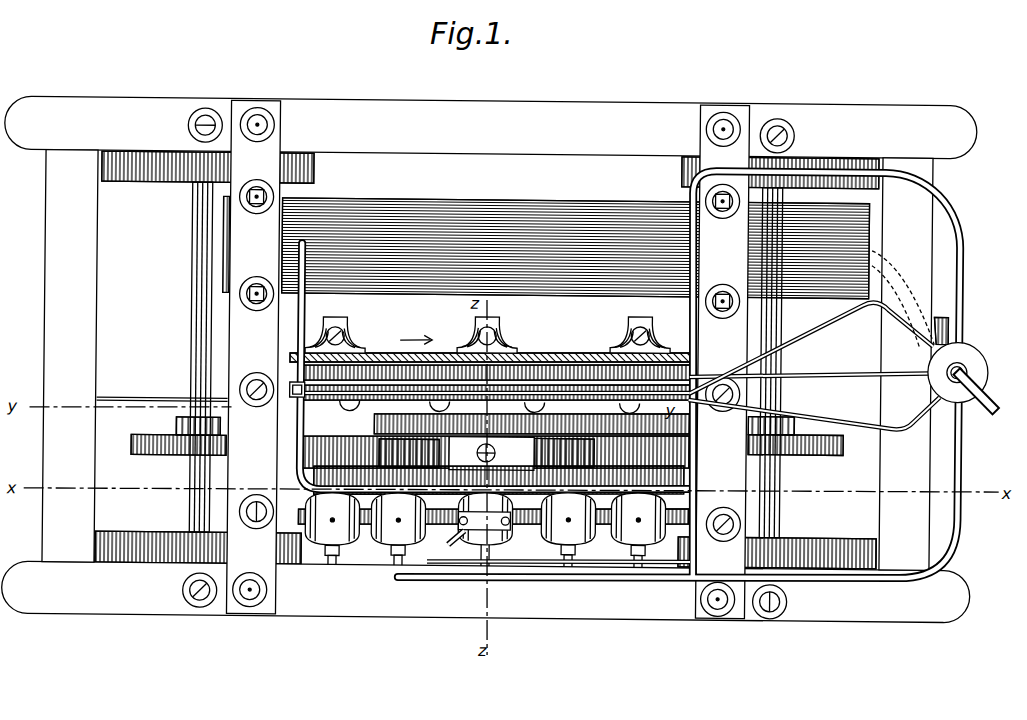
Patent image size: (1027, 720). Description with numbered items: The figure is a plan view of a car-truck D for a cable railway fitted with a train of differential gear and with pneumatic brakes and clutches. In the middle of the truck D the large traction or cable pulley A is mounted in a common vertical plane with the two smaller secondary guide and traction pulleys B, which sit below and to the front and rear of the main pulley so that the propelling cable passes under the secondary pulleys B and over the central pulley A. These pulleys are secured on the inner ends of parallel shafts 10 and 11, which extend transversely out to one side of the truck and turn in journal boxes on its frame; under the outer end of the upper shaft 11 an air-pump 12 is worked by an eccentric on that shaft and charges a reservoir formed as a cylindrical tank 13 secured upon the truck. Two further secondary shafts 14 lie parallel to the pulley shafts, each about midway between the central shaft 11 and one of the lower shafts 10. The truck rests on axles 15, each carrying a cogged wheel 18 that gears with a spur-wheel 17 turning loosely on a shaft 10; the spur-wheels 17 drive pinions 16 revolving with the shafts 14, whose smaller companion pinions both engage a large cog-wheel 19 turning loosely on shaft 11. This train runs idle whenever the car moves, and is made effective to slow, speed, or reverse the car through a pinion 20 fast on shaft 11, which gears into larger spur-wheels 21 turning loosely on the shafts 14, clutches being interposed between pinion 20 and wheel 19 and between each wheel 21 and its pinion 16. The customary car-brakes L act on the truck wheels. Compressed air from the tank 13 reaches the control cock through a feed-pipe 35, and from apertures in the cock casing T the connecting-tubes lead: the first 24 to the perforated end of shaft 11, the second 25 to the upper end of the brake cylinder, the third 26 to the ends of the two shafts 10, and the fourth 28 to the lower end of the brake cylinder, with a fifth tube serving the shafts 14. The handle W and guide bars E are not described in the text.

The secondary pulley shaft 10 is at (335, 318).
The main pulley shaft 11 is at (492, 318).
The air pump 12 is at (485, 535).
The cylindrical tank 13 is at (576, 248).
The secondary shaft 14 is at (406, 550).
The truck axle 15 is at (198, 342).
The pinion 16 is at (487, 436).
The spur wheel 17 is at (495, 444).
The cogged wheel 18 is at (172, 440).
The cog wheel 19 is at (531, 416).
The pinion 20 is at (510, 478).
The spur wheel 21 is at (320, 472).
The connecting tube 24 is at (962, 490).
The connecting tube 25 is at (890, 420).
The connecting tube 26 is at (848, 372).
The connecting tube 28 is at (900, 308).
The feed pipe 35 is at (940, 312).
The main cable pulley A is at (537, 352).
The secondary pulley B is at (491, 335).
The car truck D is at (488, 359).
The guide bar E is at (680, 178).
The car brake L is at (110, 162).
The cock casing T is at (958, 372).
The handle W is at (976, 405).